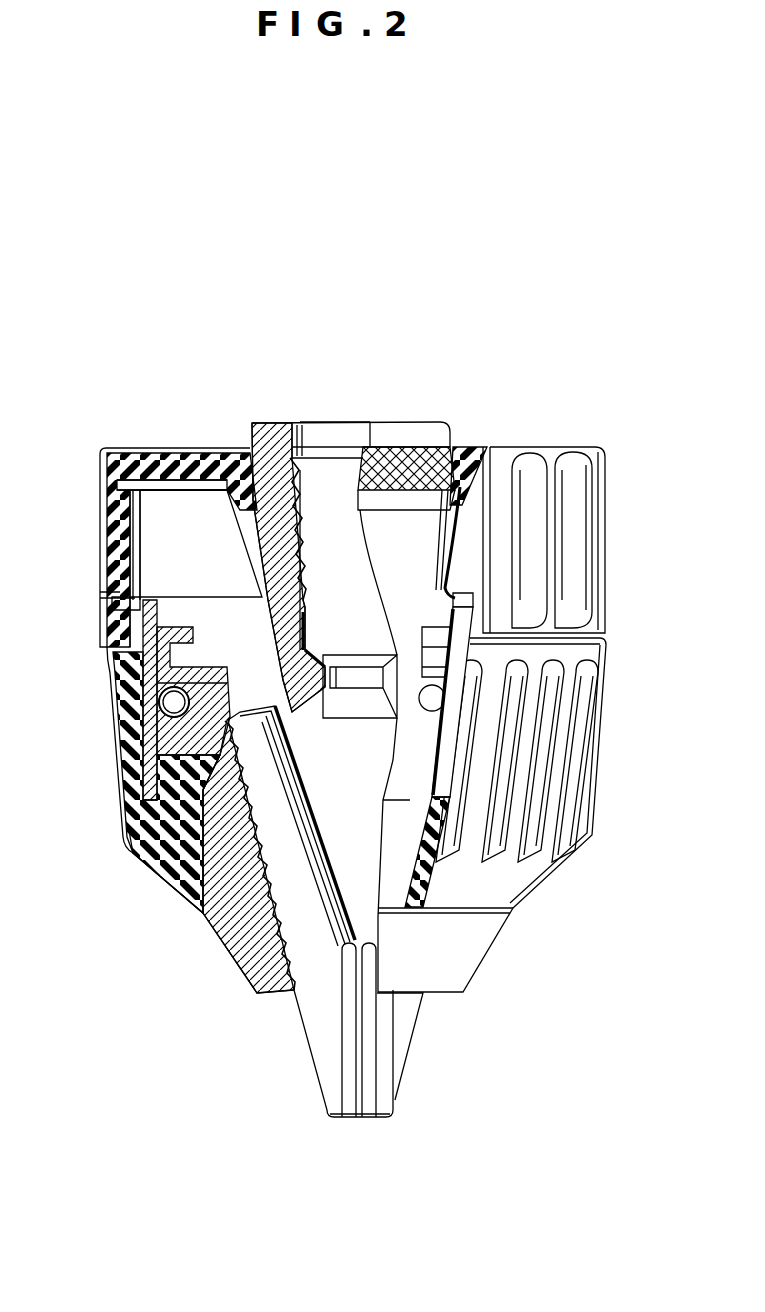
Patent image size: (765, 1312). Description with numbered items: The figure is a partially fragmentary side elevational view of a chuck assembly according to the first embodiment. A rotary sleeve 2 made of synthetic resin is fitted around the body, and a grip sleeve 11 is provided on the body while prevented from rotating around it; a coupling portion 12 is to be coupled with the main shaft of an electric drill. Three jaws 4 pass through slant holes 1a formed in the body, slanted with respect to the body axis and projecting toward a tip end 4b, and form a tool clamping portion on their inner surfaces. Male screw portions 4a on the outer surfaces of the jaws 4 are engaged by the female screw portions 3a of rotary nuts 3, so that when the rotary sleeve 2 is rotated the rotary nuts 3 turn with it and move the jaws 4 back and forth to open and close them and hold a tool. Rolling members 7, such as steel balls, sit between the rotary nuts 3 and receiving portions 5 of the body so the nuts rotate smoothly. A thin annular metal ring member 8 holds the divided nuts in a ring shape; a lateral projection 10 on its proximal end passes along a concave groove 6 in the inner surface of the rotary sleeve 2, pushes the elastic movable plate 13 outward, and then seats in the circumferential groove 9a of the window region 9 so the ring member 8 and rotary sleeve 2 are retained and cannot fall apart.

The slant hole 1a is at (250, 667).
The rotary sleeve 2 is at (587, 713).
The rotary nut 3 is at (125, 770).
The female screw portion 3a is at (170, 885).
The jaw 4 is at (318, 1073).
The male screw portion 4a is at (290, 945).
The tip end 4b is at (424, 1139).
The receiving portion 5 is at (110, 690).
The concave groove 6 is at (103, 505).
The rolling member 7 is at (128, 725).
The ring member 8 is at (108, 664).
The interior space 9 is at (152, 592).
The circumferential groove 9a is at (100, 595).
The lateral projection 10 is at (112, 604).
The grip sleeve 11 is at (603, 470).
The coupling portion 12 is at (336, 400).
The movable plate 13 is at (141, 595).